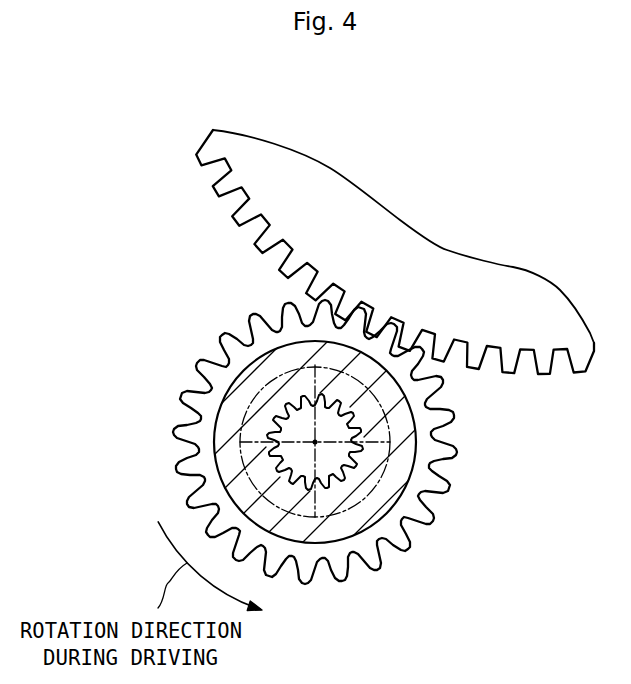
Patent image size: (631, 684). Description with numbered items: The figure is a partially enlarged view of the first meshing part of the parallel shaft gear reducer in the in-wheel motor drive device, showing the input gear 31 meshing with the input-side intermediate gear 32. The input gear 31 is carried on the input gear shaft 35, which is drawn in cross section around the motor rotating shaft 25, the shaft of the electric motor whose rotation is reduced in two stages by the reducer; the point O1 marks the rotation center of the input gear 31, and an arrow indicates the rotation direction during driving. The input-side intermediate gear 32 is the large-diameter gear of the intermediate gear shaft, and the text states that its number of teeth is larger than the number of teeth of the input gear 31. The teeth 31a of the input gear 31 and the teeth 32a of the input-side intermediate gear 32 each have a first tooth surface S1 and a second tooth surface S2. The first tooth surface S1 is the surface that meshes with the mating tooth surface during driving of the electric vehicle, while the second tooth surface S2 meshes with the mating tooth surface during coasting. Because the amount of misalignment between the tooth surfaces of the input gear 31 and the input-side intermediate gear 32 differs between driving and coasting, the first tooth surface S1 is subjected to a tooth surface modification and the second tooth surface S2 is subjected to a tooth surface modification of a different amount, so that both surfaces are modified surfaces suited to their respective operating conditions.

The input gear 31 is at (192, 430).
The teeth of the input gear 31a is at (305, 578).
The input-side intermediate gear 32 is at (342, 217).
The teeth of the input-side intermediate gear 32a is at (547, 362).
The input gear shaft 35 is at (350, 518).
The motor rotating shaft 25 is at (335, 459).
The rotation center axis O1 is at (315, 441).
The first tooth surface S1 is at (250, 231).
The second tooth surface S2 is at (236, 202).